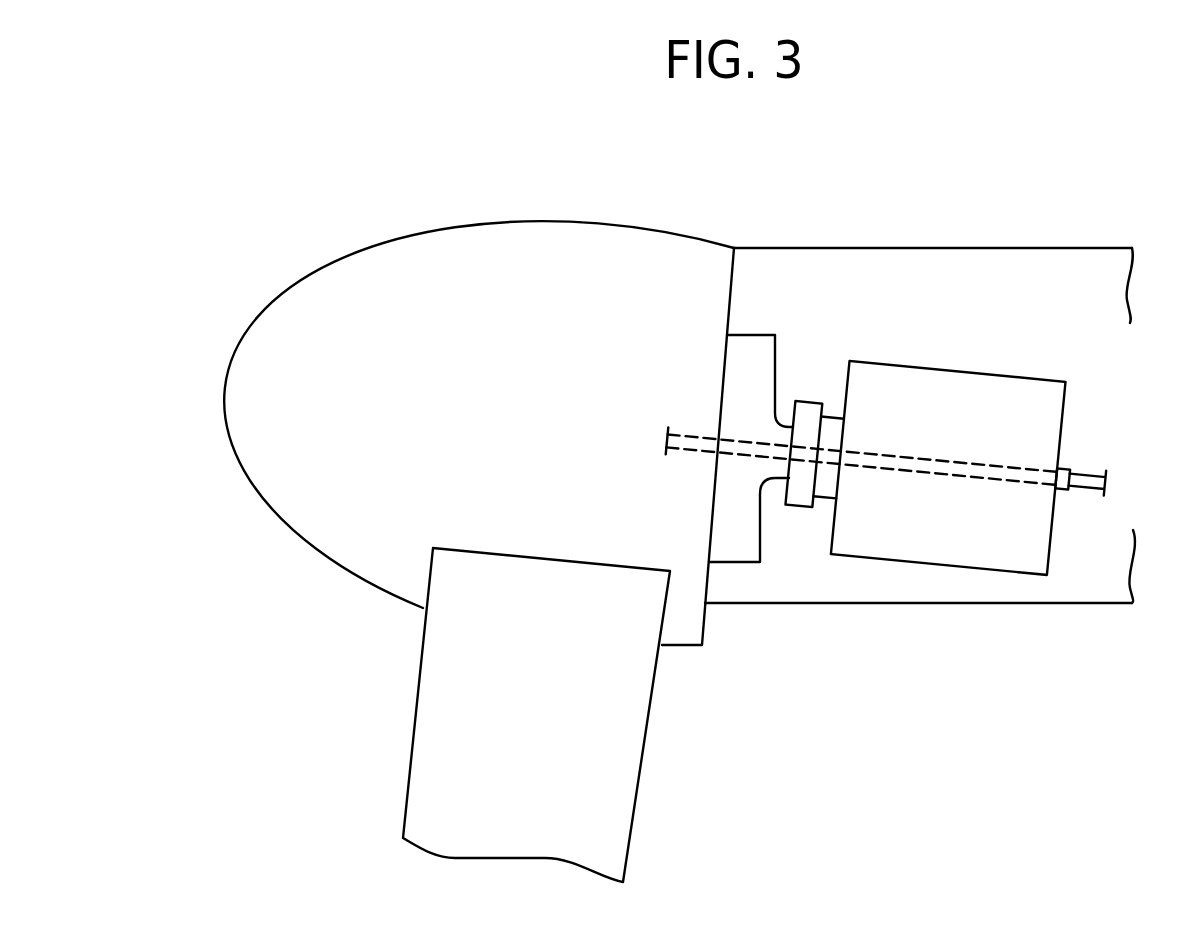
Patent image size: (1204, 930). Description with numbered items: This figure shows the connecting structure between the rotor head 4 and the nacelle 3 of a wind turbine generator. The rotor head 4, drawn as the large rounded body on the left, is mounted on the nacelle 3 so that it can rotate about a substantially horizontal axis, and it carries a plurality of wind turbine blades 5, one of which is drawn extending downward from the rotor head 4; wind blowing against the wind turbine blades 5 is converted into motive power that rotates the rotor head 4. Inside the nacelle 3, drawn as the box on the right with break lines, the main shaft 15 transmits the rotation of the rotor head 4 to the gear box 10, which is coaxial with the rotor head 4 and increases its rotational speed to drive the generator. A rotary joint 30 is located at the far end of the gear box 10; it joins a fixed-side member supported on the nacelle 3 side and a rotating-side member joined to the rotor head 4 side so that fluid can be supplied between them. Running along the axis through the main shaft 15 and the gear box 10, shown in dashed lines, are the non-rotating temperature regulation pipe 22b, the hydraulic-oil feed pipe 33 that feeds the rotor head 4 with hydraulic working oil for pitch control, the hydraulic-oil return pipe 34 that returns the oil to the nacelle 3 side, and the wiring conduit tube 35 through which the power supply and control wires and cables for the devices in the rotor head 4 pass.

The nacelle 3 is at (1013, 248).
The rotor head 4 is at (318, 525).
The wind turbine blade 5 is at (443, 709).
The gear box 10 is at (955, 363).
The main shaft 15 is at (768, 434).
The rotary joint 30 is at (1062, 492).
The temperature regulation pipe 22b is at (852, 551).
The hydraulic-oil feed pipe 33 is at (852, 551).
The hydraulic-oil return pipe 34 is at (852, 551).
The wiring conduit tube 35 is at (953, 475).